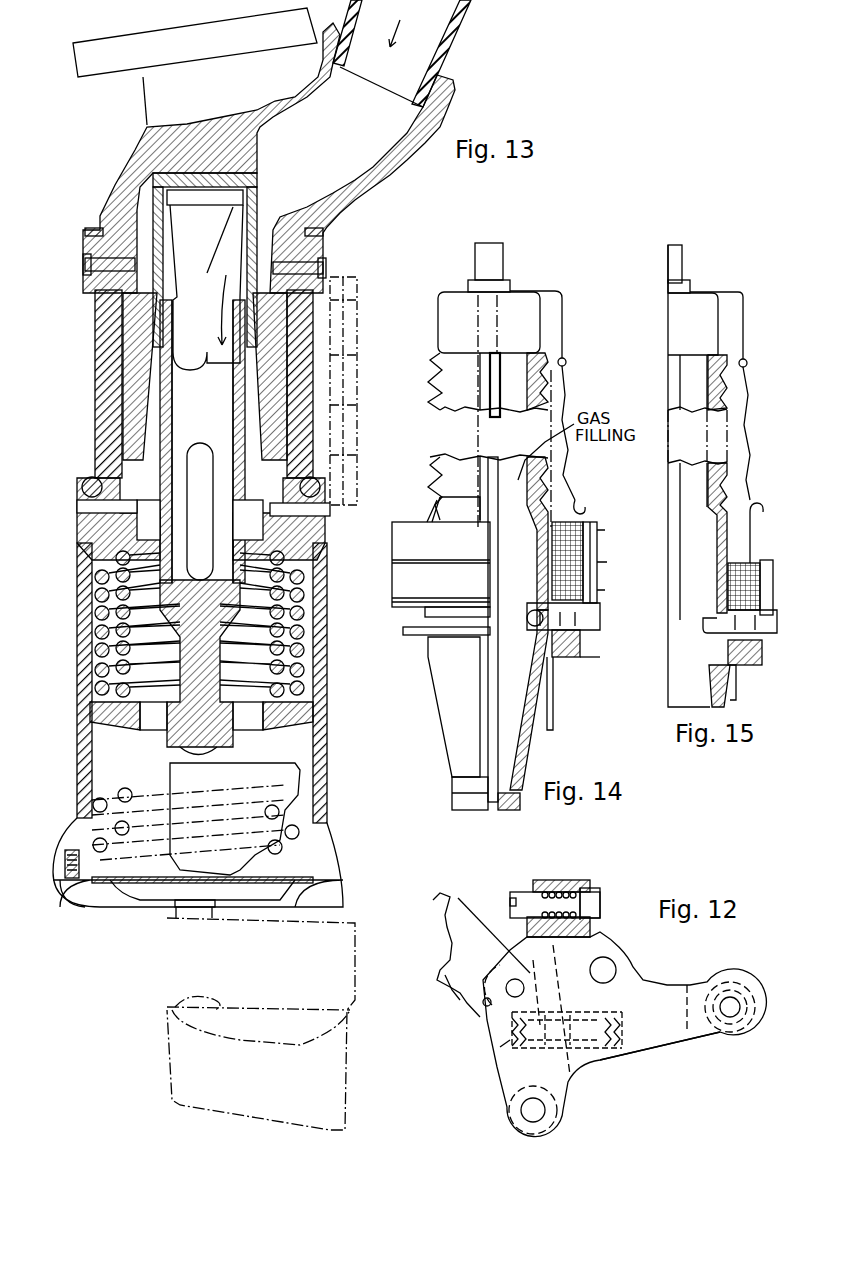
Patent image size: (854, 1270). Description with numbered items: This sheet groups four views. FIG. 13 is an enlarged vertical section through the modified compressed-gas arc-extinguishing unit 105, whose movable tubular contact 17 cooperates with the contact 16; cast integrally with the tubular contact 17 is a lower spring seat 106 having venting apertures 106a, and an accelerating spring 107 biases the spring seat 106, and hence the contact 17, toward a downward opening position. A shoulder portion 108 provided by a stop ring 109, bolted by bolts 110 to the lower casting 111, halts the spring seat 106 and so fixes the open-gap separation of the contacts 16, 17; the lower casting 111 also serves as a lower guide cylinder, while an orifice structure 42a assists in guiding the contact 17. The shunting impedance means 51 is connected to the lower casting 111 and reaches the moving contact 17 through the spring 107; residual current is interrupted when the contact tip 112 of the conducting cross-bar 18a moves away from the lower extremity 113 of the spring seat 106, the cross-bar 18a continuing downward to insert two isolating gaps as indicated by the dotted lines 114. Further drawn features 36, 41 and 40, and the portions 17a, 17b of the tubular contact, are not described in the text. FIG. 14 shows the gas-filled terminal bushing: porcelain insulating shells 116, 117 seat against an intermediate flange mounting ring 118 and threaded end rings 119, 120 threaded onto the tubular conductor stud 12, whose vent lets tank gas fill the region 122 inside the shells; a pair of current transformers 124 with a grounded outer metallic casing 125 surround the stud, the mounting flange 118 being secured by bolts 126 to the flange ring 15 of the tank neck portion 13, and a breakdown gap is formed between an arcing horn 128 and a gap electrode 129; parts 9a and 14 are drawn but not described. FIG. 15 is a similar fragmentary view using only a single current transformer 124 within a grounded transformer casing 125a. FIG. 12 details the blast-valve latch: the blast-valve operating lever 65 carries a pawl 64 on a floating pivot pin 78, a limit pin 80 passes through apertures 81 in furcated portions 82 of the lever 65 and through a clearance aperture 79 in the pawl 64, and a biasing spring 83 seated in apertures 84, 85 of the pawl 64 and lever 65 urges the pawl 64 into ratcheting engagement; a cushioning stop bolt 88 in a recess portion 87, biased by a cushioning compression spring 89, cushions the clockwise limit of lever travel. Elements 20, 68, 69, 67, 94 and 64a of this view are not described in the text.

In FIG. 13, the inlet pipe 36 is at (462, 50).
In FIG. 13, the cavity of housing 41 is at (334, 153).
In FIG. 13, the contact 16 is at (290, 193).
In FIG. 13, the valve member 40 is at (195, 353).
In FIG. 13, the movable tubular contact 17 is at (204, 406).
In FIG. 13, the tube wall 17a is at (246, 398).
In FIG. 13, the slot 17b is at (191, 452).
In FIG. 13, the orifice structure 42a is at (135, 465).
In FIG. 13, the arc-extinguishing unit 105 is at (82, 423).
In FIG. 13, the shunting impedance means 51 is at (358, 292).
In FIG. 13, the lower casting 111 is at (78, 733).
In FIG. 13, the contact tip 112 is at (220, 752).
In FIG. 13, the lower spring seat 106 is at (112, 718).
In FIG. 13, the venting apertures 106a is at (147, 730).
In FIG. 13, the lower extremity of spring seat 113 is at (173, 747).
In FIG. 13, the accelerating spring 107 is at (304, 612).
In FIG. 13, the conducting cross-bar 18a is at (282, 773).
In FIG. 13, the stop ring 109 is at (60, 880).
In FIG. 13, the bolts 110 is at (76, 896).
In FIG. 13, the shoulder portion 108 is at (117, 882).
In FIG. 13, the dotted lines 114 is at (167, 1033).
In FIG. 14, the threaded end ring 120 is at (511, 287).
In FIG. 15, the threaded end ring 120 is at (690, 282).
In FIG. 14, the insulator cap 9a is at (432, 366).
In FIG. 14, the hollow insulating shell 116 is at (432, 393).
In FIG. 14, the conductor rod 14 is at (483, 420).
In FIG. 14, the arcing horn 128 is at (567, 297).
In FIG. 15, the arcing horn 128 is at (746, 295).
In FIG. 14, the gap electrode 129 is at (577, 503).
In FIG. 15, the gap electrode 129 is at (753, 504).
In FIG. 14, the region interiorly of the bushing shells 122 is at (528, 536).
In FIG. 15, the region interiorly of the bushing shells 122 is at (712, 568).
In FIG. 14, the tubular conductor stud 12 is at (498, 569).
In FIG. 15, the tubular conductor stud 12 is at (676, 519).
In FIG. 14, the flange mounting ring 118 is at (404, 631).
In FIG. 15, the flange mounting ring 118 is at (765, 655).
In FIG. 14, the threaded end ring 119 is at (468, 803).
In FIG. 14, the hollow insulating shell 117 is at (525, 766).
In FIG. 14, the current transformer 124 is at (585, 540).
In FIG. 15, the current transformer 124 is at (762, 606).
In FIG. 14, the grounded outer metallic casing 125 is at (585, 588).
In FIG. 14, the flange ring 15 is at (580, 648).
In FIG. 14, the bolts 126 is at (572, 660).
In FIG. 14, the neck portion 13 is at (555, 700).
In FIG. 15, the neck portion 13 is at (740, 703).
In FIG. 15, the grounded transformer casing 125a is at (779, 614).
In FIG. 12, the lever 20 is at (625, 1095).
In FIG. 12, the blast-valve operating lever 65 is at (608, 950).
In FIG. 12, the apertures 81 is at (512, 985).
In FIG. 12, the limit pin 80 is at (530, 975).
In FIG. 12, the lever end boss 68 is at (740, 980).
In FIG. 12, the pivot pin 69 is at (733, 1015).
In FIG. 12, the lever arm 67 is at (667, 1040).
In FIG. 12, the floating pivot pin 78 is at (521, 1112).
In FIG. 12, the recess portion 87 is at (572, 880).
In FIG. 12, the cushioning stop bolt 88 is at (600, 892).
In FIG. 12, the cushioning compression spring 89 is at (555, 890).
In FIG. 12, the bracket 94 is at (440, 895).
In FIG. 12, the pawl 64 is at (460, 900).
In FIG. 12, the link end 64a is at (442, 975).
In FIG. 12, the clearance aperture 79 is at (510, 1000).
In FIG. 12, the aperture 84 is at (507, 1027).
In FIG. 12, the biasing spring 83 is at (575, 1015).
In FIG. 12, the aperture 85 is at (607, 1018).
In FIG. 12, the furcated portions 82 is at (500, 1047).